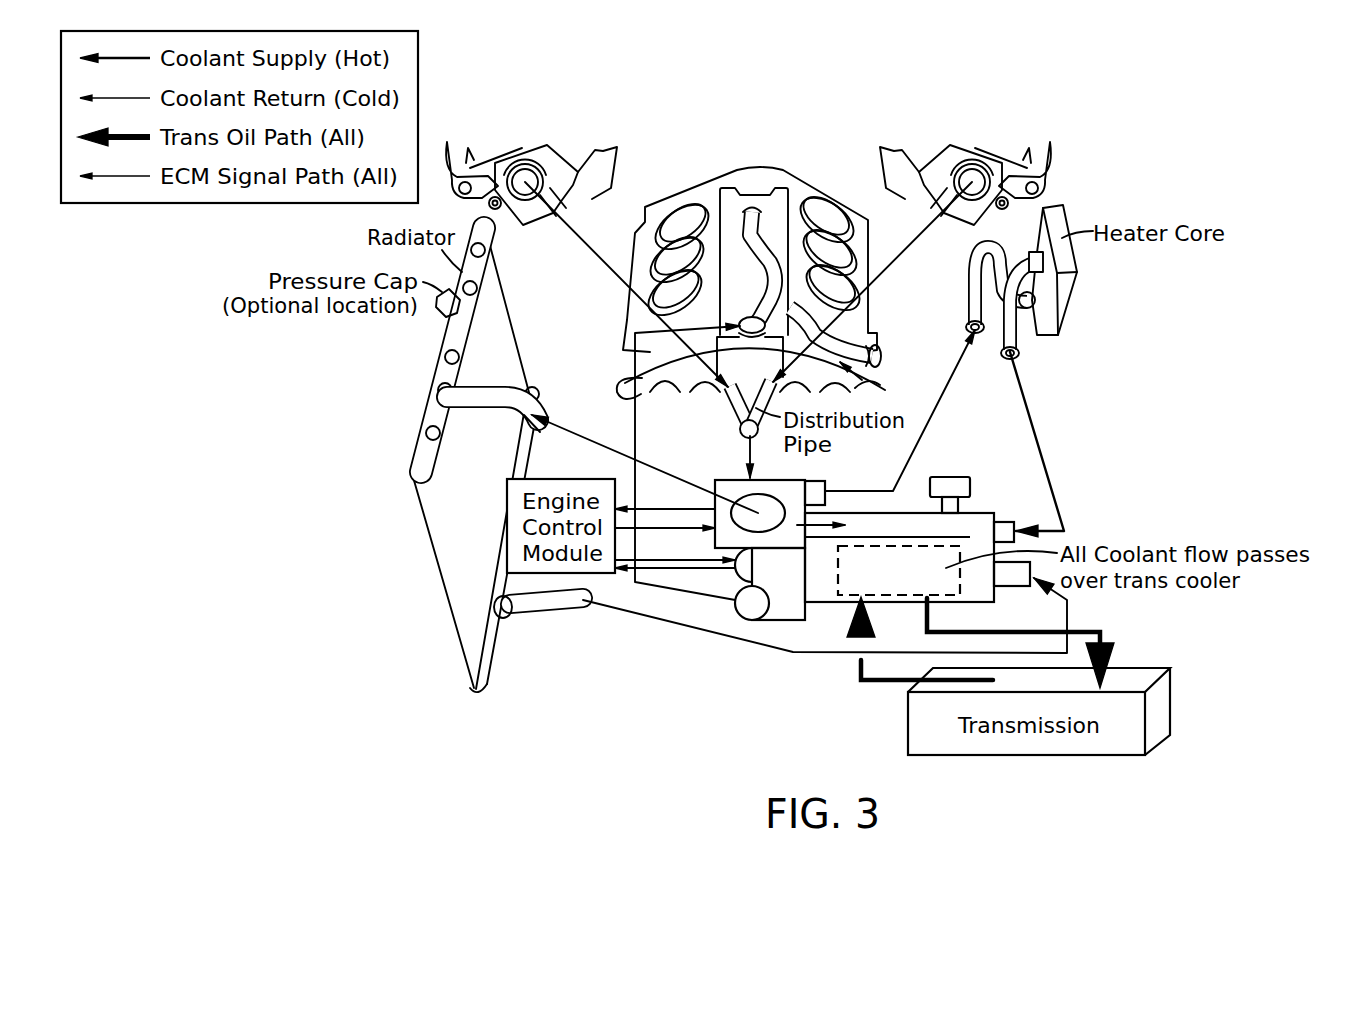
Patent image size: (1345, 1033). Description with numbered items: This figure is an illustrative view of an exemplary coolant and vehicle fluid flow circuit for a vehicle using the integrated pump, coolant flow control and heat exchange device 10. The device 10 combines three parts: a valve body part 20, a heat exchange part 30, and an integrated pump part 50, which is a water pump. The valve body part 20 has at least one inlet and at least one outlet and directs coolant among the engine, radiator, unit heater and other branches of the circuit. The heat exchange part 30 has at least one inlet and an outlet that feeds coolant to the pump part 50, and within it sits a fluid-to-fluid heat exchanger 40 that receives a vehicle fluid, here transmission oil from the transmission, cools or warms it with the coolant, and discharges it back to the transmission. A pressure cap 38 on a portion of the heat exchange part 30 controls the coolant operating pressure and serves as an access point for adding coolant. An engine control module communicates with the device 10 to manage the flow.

The integrated pump, coolant flow control and heat exchange device 10 is at (978, 531).
The valve body part 20 is at (728, 483).
The heat exchange part 30 is at (826, 588).
The pressure cap 38 is at (955, 476).
The heat exchanger 40 is at (875, 543).
The pump part 50 is at (795, 589).